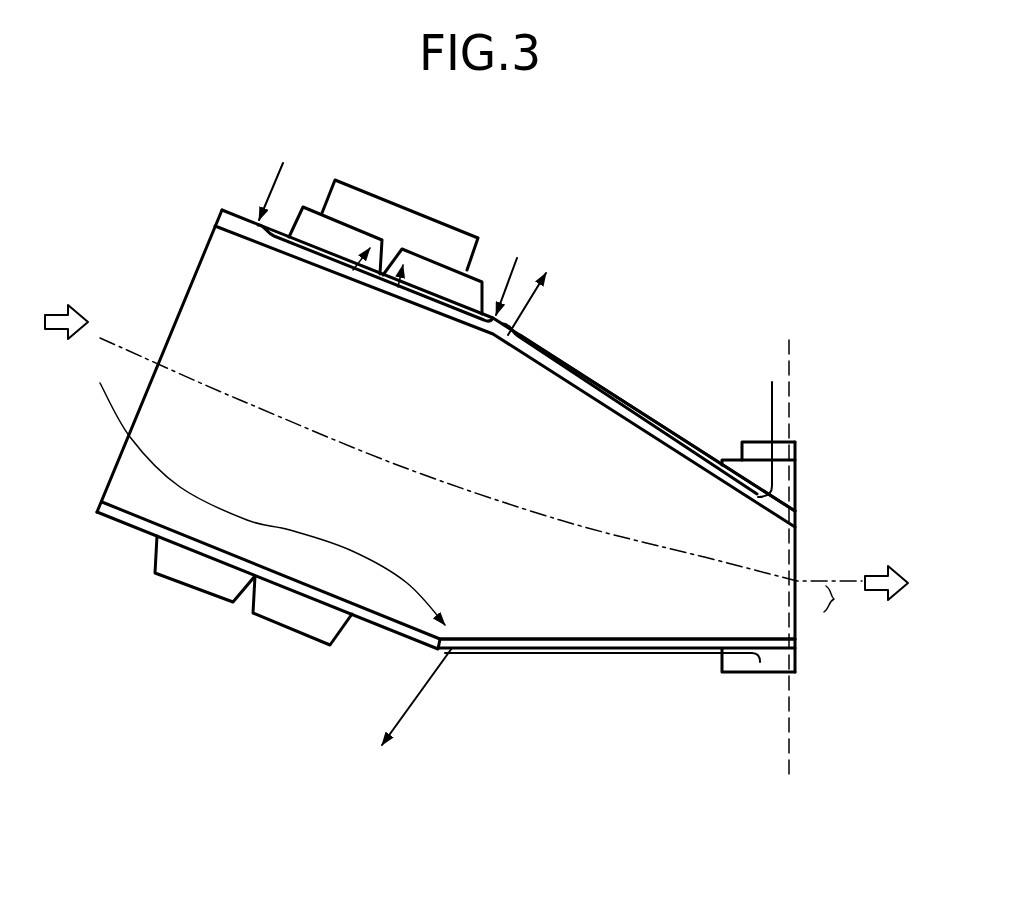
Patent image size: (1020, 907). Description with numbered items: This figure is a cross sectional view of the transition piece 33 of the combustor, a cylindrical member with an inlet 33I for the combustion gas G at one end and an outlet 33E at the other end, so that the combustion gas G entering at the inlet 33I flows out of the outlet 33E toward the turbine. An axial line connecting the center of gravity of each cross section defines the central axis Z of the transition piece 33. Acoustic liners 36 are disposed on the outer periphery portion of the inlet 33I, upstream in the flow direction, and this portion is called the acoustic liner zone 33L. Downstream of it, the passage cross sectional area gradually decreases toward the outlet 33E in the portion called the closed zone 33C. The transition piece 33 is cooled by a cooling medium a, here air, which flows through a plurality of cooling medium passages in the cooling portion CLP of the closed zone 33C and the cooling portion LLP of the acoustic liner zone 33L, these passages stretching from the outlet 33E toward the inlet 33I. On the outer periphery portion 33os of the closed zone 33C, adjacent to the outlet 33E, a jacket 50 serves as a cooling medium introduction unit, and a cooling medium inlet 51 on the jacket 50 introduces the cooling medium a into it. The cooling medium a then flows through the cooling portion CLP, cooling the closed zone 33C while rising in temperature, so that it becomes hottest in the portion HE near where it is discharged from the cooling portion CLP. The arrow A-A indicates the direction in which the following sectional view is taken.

The transition piece 33 is at (136, 152).
The inlet 33I is at (118, 459).
The outlet 33E is at (799, 558).
The acoustic liner zone 33L is at (86, 561).
The closed zone 33C is at (430, 700).
The outer periphery portion 33os is at (686, 440).
The cooling portion LLP is at (243, 186).
The cooling portion CLP is at (585, 368).
The portion near outlet of cooling portion HE is at (264, 490).
The acoustic liner 36 is at (337, 237).
The jacket 50 is at (797, 490).
The cooling medium inlet 51 is at (797, 448).
The cooling medium a is at (518, 455).
The combustion gas G is at (475, 452).
The central axis Z is at (828, 617).
The arrow A- A is at (793, 357).